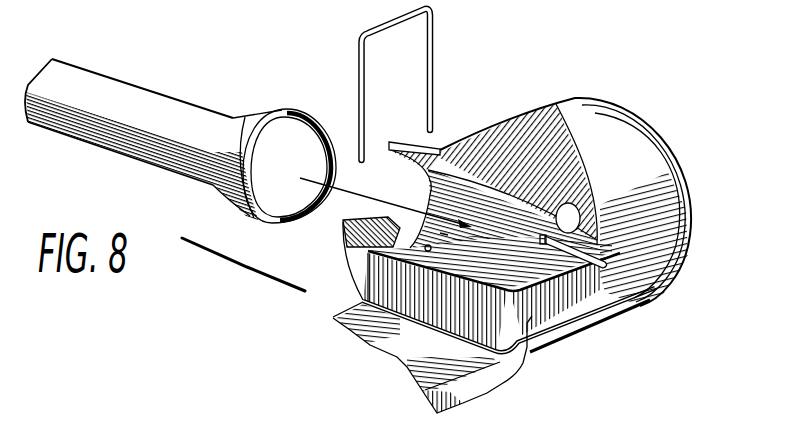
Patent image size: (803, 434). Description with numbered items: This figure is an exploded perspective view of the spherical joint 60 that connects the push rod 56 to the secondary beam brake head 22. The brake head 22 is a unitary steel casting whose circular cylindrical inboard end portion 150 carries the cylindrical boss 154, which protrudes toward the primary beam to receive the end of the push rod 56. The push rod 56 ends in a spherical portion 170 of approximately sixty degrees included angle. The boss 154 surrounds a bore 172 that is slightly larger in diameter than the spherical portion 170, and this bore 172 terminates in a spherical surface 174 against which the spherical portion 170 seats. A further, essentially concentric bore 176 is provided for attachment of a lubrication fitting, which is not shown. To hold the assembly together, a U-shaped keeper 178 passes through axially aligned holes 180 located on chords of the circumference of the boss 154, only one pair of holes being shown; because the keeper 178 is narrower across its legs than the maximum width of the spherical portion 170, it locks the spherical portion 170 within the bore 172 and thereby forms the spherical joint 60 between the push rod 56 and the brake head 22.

The secondary beam brake head 22 is at (720, 176).
The push rod 56 is at (64, 118).
The spherical joint 60 is at (248, 268).
The circular cylindrical inboard end portion 150 is at (549, 126).
The cylindrical boss 154 is at (343, 228).
The spherical portion 170 is at (293, 137).
The bore 172 is at (408, 177).
The spherical surface 174 is at (527, 207).
The concentric bore 176 is at (577, 238).
The U-shaped keeper 178 is at (403, 17).
The axially aligned holes 180 is at (423, 141).